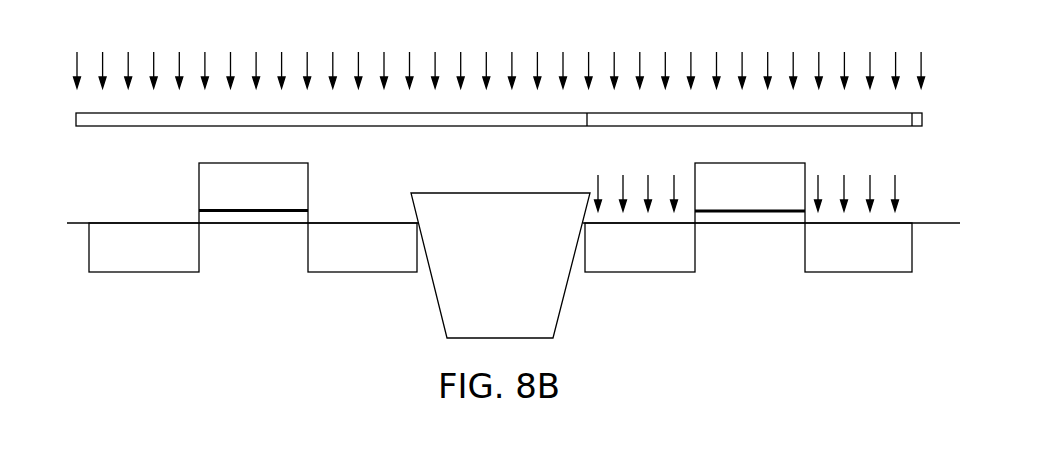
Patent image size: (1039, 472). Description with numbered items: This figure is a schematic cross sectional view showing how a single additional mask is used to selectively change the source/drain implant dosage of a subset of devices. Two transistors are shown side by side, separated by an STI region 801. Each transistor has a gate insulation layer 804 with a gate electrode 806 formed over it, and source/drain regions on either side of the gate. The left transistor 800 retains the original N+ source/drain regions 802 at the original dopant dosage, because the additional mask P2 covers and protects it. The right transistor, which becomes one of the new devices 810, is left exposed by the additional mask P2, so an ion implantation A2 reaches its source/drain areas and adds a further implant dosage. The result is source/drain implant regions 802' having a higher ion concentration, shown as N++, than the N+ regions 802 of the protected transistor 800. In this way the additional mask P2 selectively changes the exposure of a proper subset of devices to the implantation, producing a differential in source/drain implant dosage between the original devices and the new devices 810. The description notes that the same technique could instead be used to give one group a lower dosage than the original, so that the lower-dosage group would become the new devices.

The transistor 800 is at (250, 257).
The STI region 801 is at (522, 267).
The source/drain regions 802 is at (242, 273).
The source/drain implant regions 802' is at (743, 273).
The gate insulation layer 804 is at (280, 209).
The gate electrode 806 is at (222, 163).
The new devices 810 is at (751, 263).
The ion implantation process A2 is at (727, 113).
The additional mask P2 is at (925, 117).